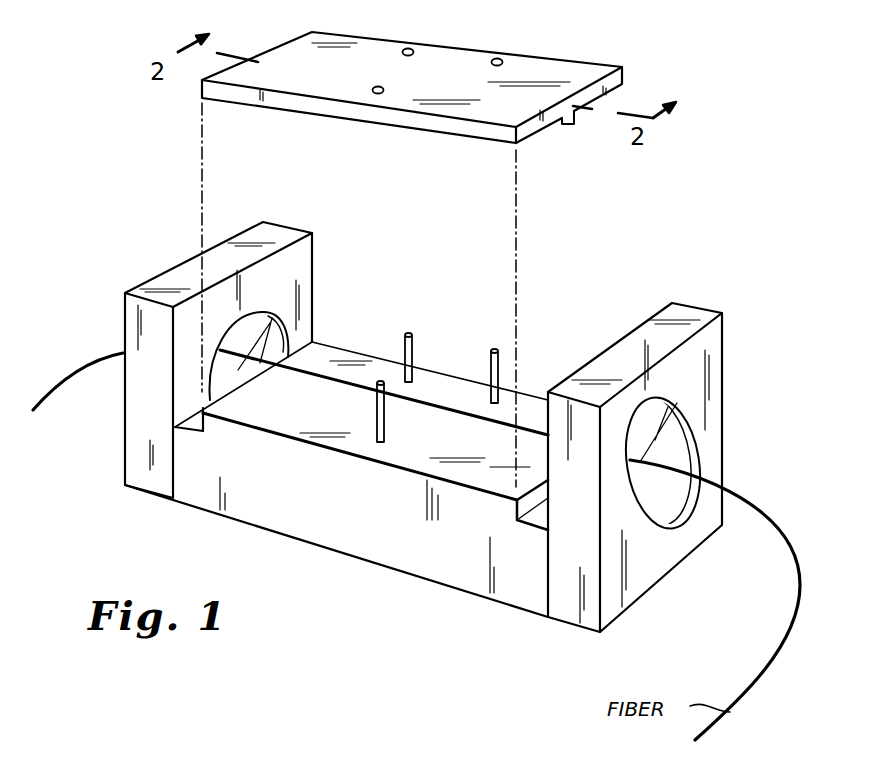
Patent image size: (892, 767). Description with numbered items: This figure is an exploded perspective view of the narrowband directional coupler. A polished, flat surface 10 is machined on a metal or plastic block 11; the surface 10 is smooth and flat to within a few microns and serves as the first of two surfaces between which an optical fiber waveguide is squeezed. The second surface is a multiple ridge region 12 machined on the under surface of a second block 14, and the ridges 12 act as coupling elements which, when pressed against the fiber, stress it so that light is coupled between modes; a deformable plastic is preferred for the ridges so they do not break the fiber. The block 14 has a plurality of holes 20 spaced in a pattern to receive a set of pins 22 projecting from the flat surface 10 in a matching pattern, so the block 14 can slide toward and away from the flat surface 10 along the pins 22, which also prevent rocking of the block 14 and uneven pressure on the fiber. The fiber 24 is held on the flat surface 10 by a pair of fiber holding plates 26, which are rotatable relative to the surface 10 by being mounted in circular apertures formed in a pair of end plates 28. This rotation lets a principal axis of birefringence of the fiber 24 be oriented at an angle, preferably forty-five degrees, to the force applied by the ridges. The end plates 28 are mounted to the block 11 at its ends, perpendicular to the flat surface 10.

The polished flat surface 10 is at (430, 452).
The block 11 is at (256, 528).
The multiple ridge region 12 is at (573, 125).
The second block 14 is at (568, 60).
The holes 20 is at (384, 88).
The pins 22 is at (493, 357).
The fiber 24 is at (336, 382).
The fiber holding plates 26 is at (238, 374).
The end plates 28 is at (172, 280).